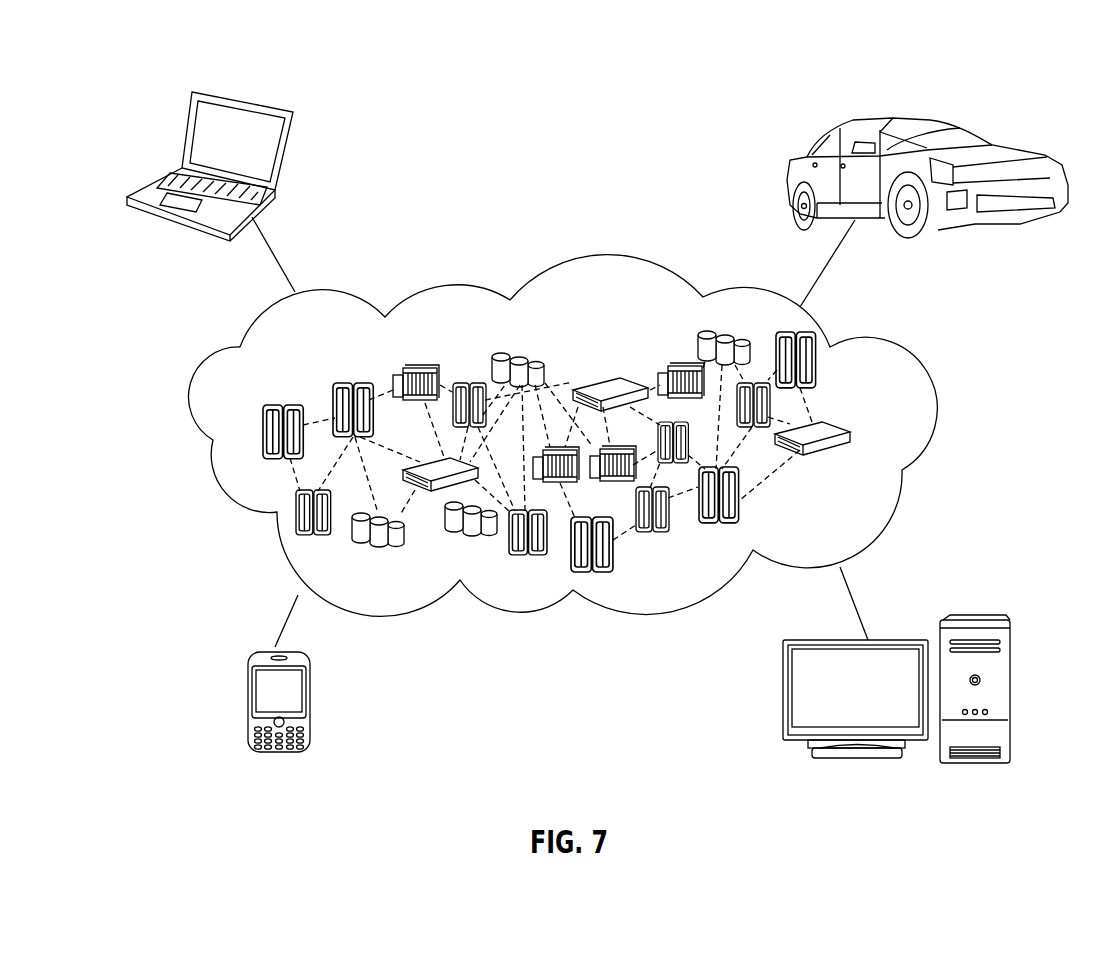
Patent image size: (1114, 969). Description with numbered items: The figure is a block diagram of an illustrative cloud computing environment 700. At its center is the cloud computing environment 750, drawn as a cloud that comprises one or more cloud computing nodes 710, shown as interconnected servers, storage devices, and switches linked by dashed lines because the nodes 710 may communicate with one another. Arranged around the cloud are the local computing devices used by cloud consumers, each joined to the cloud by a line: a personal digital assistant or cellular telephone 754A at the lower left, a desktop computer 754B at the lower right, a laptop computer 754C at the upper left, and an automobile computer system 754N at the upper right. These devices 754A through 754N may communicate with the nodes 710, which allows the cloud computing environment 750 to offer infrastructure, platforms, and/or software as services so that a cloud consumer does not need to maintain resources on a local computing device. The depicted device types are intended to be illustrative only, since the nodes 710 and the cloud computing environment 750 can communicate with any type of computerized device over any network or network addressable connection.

The cloud computing environment 700 is at (575, 48).
The cloud computing environment 750 is at (908, 355).
The cloud computing nodes 710 is at (885, 433).
The personal digital assistant or cellular telephone 754A is at (250, 705).
The desktop computer 754B is at (975, 617).
The laptop computer 754C is at (283, 153).
The automobile computer system 754N is at (792, 158).